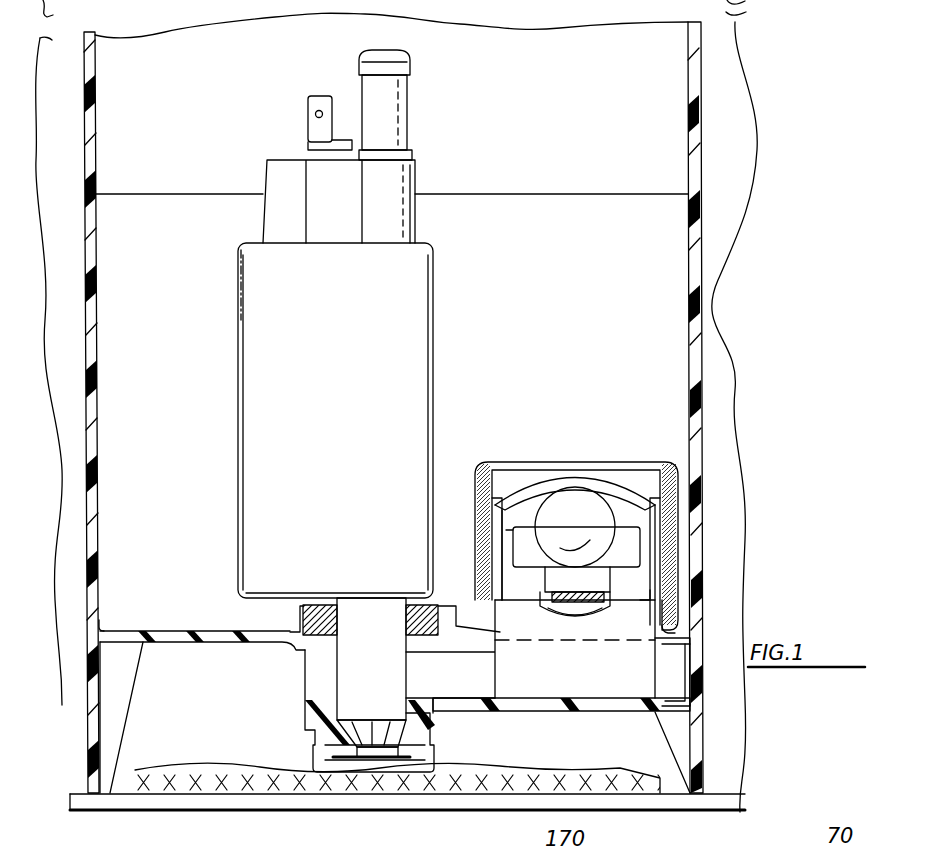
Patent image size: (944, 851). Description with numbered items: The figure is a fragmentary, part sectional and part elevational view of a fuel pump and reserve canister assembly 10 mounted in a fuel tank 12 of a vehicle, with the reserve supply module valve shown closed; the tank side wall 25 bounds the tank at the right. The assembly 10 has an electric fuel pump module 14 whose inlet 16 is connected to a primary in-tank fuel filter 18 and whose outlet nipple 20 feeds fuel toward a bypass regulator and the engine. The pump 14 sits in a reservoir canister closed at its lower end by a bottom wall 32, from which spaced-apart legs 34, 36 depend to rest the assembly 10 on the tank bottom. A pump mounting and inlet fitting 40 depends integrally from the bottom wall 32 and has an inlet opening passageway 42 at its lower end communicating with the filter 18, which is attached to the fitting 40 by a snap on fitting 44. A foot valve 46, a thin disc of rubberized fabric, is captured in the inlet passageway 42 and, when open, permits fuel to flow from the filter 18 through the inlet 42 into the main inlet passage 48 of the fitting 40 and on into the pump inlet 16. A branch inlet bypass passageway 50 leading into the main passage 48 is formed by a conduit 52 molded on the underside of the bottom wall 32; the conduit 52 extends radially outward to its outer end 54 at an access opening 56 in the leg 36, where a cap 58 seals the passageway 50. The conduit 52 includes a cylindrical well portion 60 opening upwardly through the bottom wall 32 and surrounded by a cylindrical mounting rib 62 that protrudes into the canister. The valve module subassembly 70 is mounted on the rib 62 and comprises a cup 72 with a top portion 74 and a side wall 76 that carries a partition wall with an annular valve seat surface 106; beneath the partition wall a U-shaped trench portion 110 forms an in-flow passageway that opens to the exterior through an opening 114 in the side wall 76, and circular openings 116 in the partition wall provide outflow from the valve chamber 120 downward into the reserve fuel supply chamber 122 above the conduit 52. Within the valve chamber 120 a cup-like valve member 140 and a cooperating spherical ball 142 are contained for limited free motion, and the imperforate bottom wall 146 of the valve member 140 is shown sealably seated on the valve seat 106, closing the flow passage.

The fuel pump and reserve canister assembly 10 is at (762, 145).
The fuel tank 12 is at (738, 30).
The electric fuel pump module 14 is at (240, 302).
The inlet 16 is at (378, 633).
The primary in-tank fuel filter 18 is at (195, 770).
The outlet nipple 20 is at (397, 130).
The tank side wall 25 is at (705, 338).
The bottom wall 32 is at (143, 636).
The leg 34 is at (95, 677).
The leg 36 is at (701, 747).
The pump mounting and inlet fitting 40 is at (305, 694).
The inlet opening passageway 42 is at (392, 758).
The snap on fitting 44 is at (322, 756).
The foot valve 46 is at (346, 758).
The main inlet passage 48 is at (343, 652).
The branch inlet bypass passageway 50 is at (472, 692).
The conduit 52 is at (580, 705).
The outer end 54 is at (689, 703).
The access opening 56 is at (692, 638).
The cap 58 is at (690, 660).
The cylindrical well portion 60 is at (500, 678).
The cylindrical mounting rib 62 is at (663, 598).
The valve module subassembly 70 is at (551, 412).
The cup 72 is at (666, 553).
The dome 74 is at (630, 463).
The cup side wall 76 is at (658, 618).
The annular valve seat surface 106 is at (525, 566).
The trench portion 110 is at (582, 613).
The opening 114 is at (596, 612).
The circular openings 116 is at (515, 588).
The valve chamber 120 is at (637, 508).
The reserve fuel supply chamber 122 is at (530, 691).
The valve member 140 is at (528, 523).
The spherical ball 142 is at (575, 485).
The bottom wall 146 is at (520, 548).